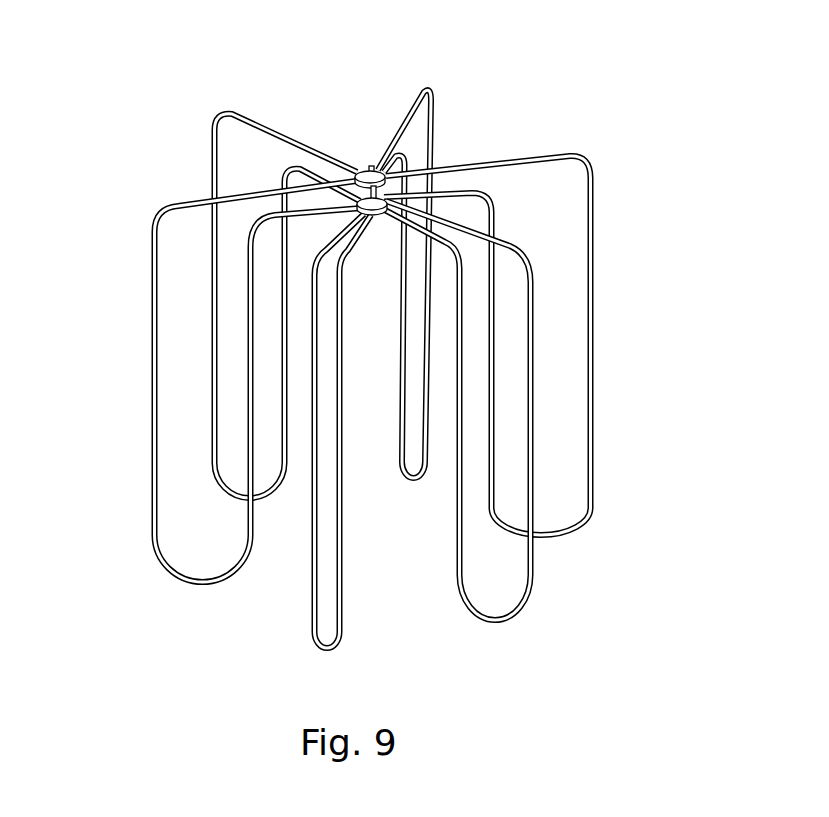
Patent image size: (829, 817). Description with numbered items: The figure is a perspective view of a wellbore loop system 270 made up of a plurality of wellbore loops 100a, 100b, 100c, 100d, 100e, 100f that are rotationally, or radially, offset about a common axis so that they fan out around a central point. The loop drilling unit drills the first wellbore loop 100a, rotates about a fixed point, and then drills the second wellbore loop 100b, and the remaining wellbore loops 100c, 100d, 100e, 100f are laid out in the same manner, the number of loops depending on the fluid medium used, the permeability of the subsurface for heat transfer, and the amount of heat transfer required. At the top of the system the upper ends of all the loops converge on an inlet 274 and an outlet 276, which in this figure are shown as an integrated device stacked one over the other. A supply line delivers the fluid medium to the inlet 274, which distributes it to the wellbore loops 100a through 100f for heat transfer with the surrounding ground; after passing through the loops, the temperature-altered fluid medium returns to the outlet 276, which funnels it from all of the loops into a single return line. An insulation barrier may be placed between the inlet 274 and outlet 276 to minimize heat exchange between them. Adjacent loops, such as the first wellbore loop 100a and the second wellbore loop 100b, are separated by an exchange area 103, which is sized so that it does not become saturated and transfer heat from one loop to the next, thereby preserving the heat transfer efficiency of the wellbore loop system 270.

The first wellbore loop 100a is at (188, 381).
The second wellbore loop 100b is at (313, 623).
The wellbore loop 100c is at (490, 622).
The wellbore loop 100d is at (590, 517).
The wellbore loop 100e is at (408, 482).
The wellbore loop 100f is at (210, 162).
The exchange area 103 is at (215, 553).
The wellbore loop system 270 is at (650, 168).
The inlet 274 is at (372, 165).
The outlet 276 is at (374, 216).